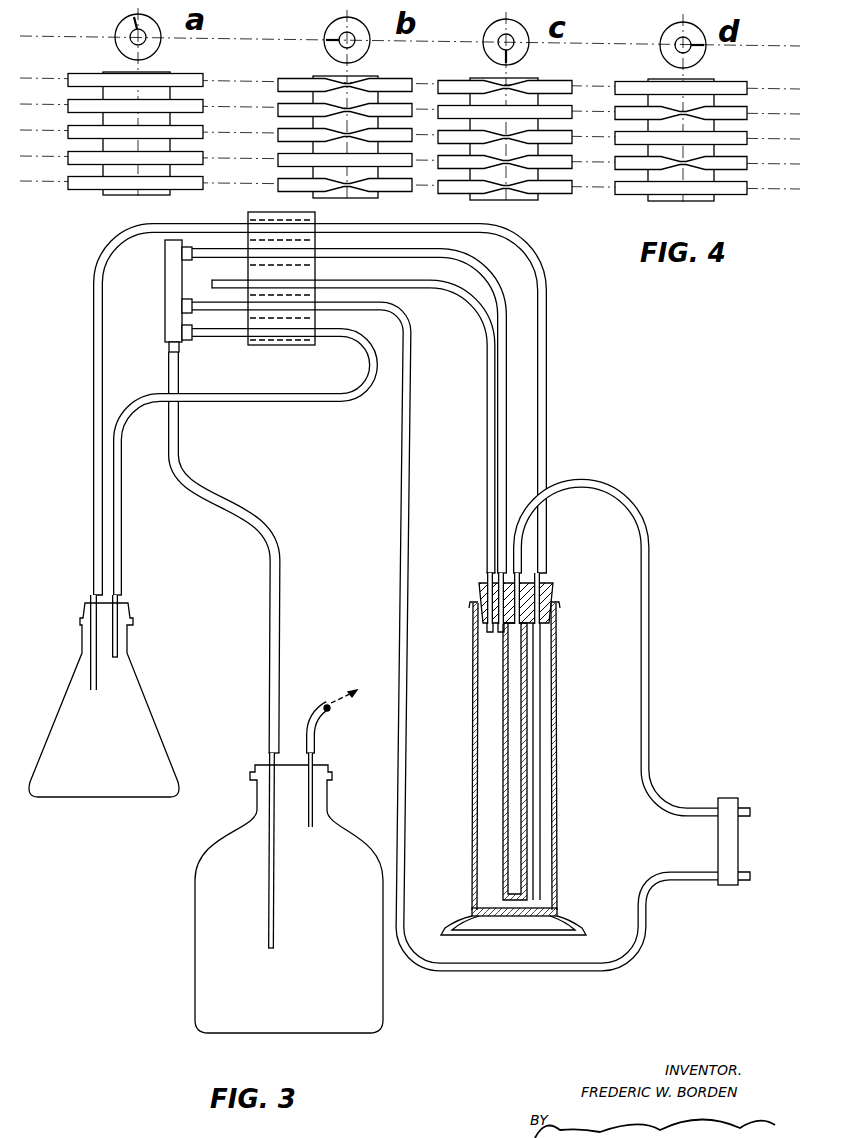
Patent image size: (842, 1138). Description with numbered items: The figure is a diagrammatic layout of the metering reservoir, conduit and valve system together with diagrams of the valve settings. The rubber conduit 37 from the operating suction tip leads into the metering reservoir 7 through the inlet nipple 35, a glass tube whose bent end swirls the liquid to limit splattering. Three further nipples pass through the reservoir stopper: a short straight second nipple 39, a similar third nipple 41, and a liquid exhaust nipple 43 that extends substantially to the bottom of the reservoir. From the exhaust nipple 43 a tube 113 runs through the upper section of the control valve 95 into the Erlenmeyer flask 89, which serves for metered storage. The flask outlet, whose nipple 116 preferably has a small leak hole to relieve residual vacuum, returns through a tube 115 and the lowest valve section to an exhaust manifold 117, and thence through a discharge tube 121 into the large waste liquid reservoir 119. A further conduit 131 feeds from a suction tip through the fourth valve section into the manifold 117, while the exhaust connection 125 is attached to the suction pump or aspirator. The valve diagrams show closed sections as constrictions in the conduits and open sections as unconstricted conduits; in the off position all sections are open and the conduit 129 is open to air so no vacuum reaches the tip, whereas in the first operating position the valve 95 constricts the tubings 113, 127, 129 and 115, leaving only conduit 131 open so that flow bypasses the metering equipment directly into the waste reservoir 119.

In FIG. 3, the metering reservoir 7 is at (555, 782).
In FIG. 3, the inlet nipple 35 is at (535, 600).
In FIG. 3, the rubber conduit 37 is at (568, 485).
In FIG. 3, the second nipple 39 is at (492, 590).
In FIG. 3, the third nipple 41 is at (486, 592).
In FIG. 3, the liquid exhaust nipple 43 is at (541, 660).
In FIG. 3, the Erlenmeyer flask 89 is at (135, 686).
In FIG. 3, the control valve 95 is at (282, 346).
In FIG. 4, the tube 113 is at (278, 85).
In FIG. 3, the tube 113 is at (548, 372).
In FIG. 4, the tube 115 is at (278, 185).
In FIG. 3, the tube 115 is at (252, 400).
In FIG. 3, the nipple 116 is at (119, 645).
In FIG. 3, the exhaust manifold 117 is at (165, 328).
In FIG. 3, the waste liquid reservoir 119 is at (197, 968).
In FIG. 3, the discharge tube 121 is at (279, 608).
In FIG. 3, the exhaust connection 125 is at (316, 744).
In FIG. 4, the tubing 127 is at (278, 110).
In FIG. 3, the tubing 127 is at (478, 264).
In FIG. 4, the conduit 129 is at (278, 135).
In FIG. 3, the conduit 129 is at (475, 306).
In FIG. 4, the conduit 131 is at (278, 160).
In FIG. 3, the conduit 131 is at (552, 972).